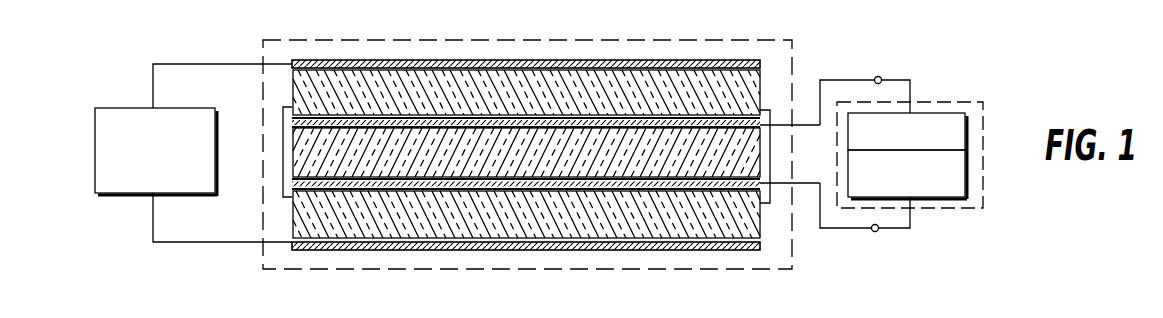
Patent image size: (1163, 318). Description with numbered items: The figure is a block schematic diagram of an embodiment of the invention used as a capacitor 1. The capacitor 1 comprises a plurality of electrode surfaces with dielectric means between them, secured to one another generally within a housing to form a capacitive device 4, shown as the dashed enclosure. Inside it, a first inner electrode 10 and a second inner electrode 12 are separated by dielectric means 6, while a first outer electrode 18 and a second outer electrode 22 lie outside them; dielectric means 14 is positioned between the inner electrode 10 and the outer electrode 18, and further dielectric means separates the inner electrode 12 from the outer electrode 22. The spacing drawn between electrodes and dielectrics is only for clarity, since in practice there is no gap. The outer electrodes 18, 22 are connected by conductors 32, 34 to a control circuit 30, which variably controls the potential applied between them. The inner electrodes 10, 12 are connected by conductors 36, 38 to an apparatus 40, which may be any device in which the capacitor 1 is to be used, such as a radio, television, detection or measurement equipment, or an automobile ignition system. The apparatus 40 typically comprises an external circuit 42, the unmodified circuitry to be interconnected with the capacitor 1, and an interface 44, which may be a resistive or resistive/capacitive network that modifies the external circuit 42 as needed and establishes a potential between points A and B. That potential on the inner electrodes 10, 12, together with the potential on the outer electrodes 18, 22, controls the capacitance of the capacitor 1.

The capacitor 1 is at (776, 116).
The capacitive device 4 is at (610, 40).
The dielectric means 6 is at (531, 162).
The first inner electrode 10 is at (624, 183).
The second inner electrode 12 is at (656, 129).
The dielectric means 14 is at (764, 222).
The first outer electrode 18 is at (602, 251).
The second outer electrode 22 is at (693, 60).
The control circuit 30 is at (127, 105).
The conductor 32 is at (195, 58).
The conductor 34 is at (176, 245).
The conductor 36 is at (841, 60).
The conductor 38 is at (842, 237).
The apparatus 40 is at (985, 162).
The external circuit 42 is at (965, 185).
The interface 44 is at (965, 135).